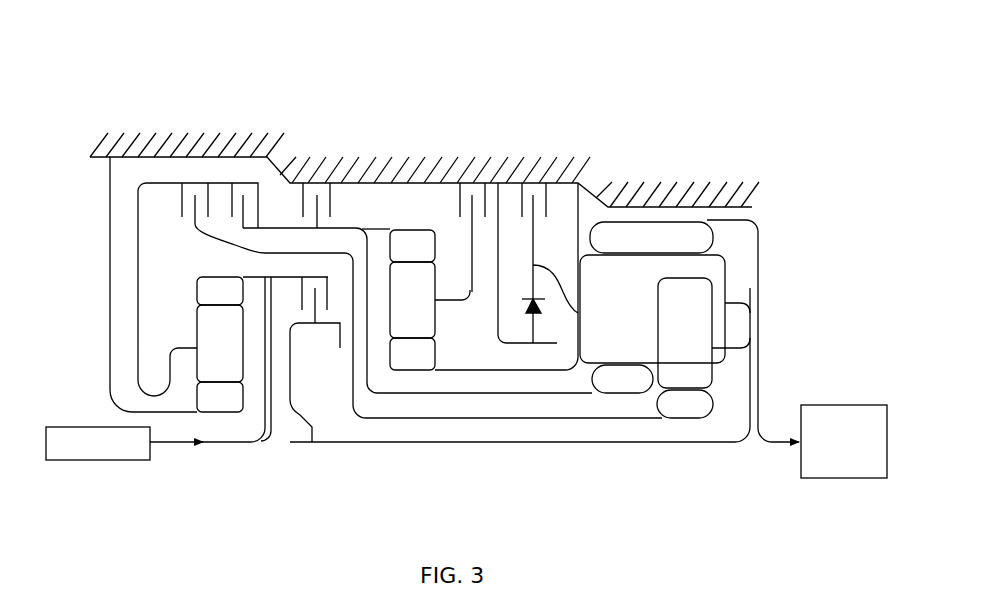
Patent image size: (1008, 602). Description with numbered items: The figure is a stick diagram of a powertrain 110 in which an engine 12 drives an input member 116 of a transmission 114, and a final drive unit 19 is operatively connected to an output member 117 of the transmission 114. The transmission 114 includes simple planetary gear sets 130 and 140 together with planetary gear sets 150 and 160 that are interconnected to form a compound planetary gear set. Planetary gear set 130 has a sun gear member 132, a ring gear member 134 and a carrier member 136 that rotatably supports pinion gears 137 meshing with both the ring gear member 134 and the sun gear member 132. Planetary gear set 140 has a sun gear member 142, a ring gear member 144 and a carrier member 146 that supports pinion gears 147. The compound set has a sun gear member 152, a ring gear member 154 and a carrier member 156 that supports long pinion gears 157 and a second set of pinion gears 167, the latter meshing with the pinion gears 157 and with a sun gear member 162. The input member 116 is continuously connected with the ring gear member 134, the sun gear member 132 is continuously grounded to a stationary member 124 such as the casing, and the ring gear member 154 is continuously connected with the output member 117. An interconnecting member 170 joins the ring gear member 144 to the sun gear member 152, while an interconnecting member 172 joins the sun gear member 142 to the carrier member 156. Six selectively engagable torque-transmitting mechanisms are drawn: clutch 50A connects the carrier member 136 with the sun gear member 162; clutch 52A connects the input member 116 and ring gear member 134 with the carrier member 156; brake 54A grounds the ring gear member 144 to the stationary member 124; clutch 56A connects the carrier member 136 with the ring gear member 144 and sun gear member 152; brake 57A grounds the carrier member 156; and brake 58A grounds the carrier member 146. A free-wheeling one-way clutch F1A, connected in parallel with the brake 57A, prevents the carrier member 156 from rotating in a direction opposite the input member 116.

The powertrain 110 is at (431, 74).
The transmission 114 is at (579, 96).
The stationary member 124 is at (370, 150).
The torque-transmitting mechanism 56A is at (253, 216).
The torque-transmitting mechanism 54A is at (328, 218).
The torque-transmitting mechanism 58A is at (464, 219).
The torque-transmitting mechanism 57A is at (543, 220).
The torque-transmitting mechanism 50A is at (189, 223).
The carrier member 136 is at (180, 347).
The ring gear member 134 is at (206, 300).
The pinion gears 137 is at (206, 352).
The sun gear member 132 is at (206, 406).
The ring gear member 144 is at (398, 255).
The pinion gears 147 is at (398, 309).
The sun gear member 142 is at (398, 363).
The carrier member 146 is at (467, 303).
The planetary gear set 140 is at (398, 379).
The ring gear member 154 is at (637, 246).
The pinion gears 157 is at (604, 318).
The pinion gears 167 is at (671, 340).
The sun gear member 152 is at (608, 388).
The sun gear member 162 is at (671, 413).
The carrier member 156 is at (552, 270).
The planetary gear set 150 is at (634, 402).
The planetary gear set 160 is at (674, 433).
The interconnecting member 170 is at (442, 395).
The interconnecting member 172 is at (492, 371).
The free-wheeling one-way clutch F1A is at (560, 326).
The engine 12 is at (122, 462).
The input member 116 is at (177, 443).
The planetary gear set 130 is at (239, 427).
The torque-transmitting mechanism 52A is at (301, 313).
The output member 117 is at (782, 445).
The final drive unit 19 is at (842, 405).